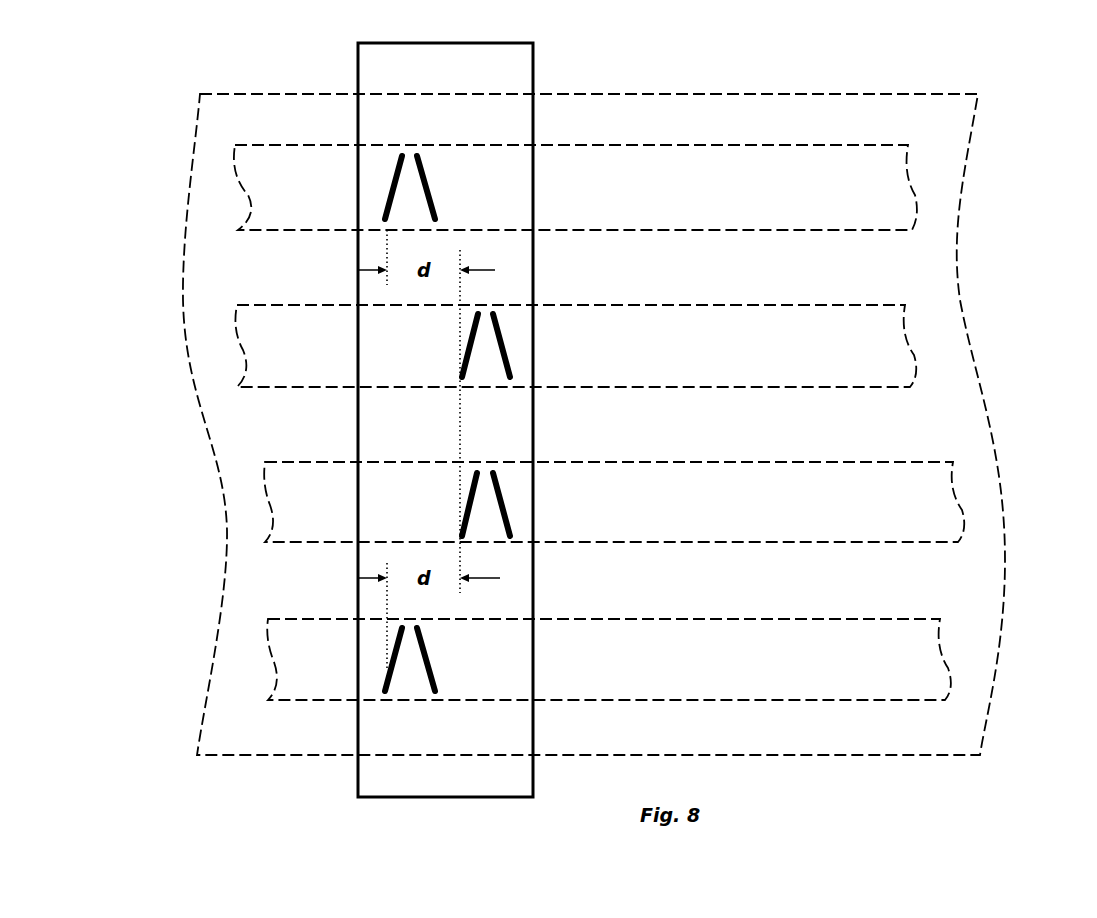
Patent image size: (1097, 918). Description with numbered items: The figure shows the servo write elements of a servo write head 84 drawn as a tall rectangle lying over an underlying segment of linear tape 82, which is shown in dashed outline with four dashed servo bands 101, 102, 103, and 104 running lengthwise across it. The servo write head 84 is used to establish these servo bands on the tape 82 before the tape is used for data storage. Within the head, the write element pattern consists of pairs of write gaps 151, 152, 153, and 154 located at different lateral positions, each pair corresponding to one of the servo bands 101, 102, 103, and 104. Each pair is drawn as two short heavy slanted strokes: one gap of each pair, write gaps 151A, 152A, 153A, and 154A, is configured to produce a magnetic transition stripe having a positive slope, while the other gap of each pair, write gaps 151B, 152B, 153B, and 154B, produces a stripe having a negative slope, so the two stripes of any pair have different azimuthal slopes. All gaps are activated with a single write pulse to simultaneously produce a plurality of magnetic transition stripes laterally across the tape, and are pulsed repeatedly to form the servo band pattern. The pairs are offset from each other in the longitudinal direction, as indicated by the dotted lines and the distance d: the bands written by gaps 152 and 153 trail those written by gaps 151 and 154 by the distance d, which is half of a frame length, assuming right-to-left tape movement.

The linear tape 82 is at (828, 108).
The servo write head 84 is at (472, 55).
The servo band 101 is at (900, 188).
The servo band 102 is at (903, 312).
The servo band 103 is at (952, 517).
The servo band 104 is at (933, 627).
The pair of write gaps 151 is at (394, 167).
The write gap 151A is at (397, 175).
The write gap 151B is at (423, 165).
The pair of write gaps 152 is at (499, 325).
The write gap 152A is at (472, 328).
The write gap 152B is at (500, 328).
The pair of write gaps 153 is at (495, 486).
The write gap 153A is at (472, 487).
The write gap 153B is at (500, 487).
The pair of write gaps 154 is at (395, 639).
The write gap 154A is at (397, 643).
The write gap 154B is at (423, 638).